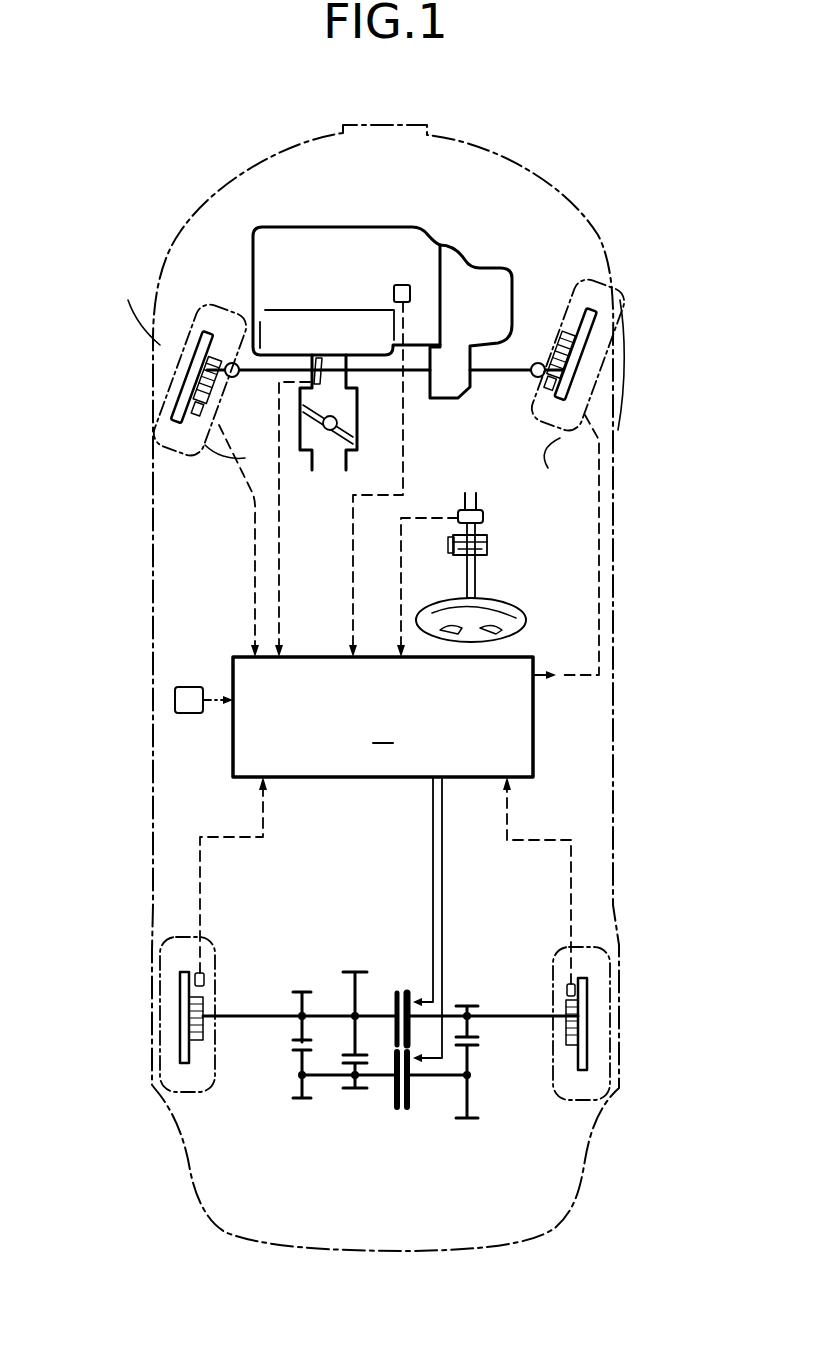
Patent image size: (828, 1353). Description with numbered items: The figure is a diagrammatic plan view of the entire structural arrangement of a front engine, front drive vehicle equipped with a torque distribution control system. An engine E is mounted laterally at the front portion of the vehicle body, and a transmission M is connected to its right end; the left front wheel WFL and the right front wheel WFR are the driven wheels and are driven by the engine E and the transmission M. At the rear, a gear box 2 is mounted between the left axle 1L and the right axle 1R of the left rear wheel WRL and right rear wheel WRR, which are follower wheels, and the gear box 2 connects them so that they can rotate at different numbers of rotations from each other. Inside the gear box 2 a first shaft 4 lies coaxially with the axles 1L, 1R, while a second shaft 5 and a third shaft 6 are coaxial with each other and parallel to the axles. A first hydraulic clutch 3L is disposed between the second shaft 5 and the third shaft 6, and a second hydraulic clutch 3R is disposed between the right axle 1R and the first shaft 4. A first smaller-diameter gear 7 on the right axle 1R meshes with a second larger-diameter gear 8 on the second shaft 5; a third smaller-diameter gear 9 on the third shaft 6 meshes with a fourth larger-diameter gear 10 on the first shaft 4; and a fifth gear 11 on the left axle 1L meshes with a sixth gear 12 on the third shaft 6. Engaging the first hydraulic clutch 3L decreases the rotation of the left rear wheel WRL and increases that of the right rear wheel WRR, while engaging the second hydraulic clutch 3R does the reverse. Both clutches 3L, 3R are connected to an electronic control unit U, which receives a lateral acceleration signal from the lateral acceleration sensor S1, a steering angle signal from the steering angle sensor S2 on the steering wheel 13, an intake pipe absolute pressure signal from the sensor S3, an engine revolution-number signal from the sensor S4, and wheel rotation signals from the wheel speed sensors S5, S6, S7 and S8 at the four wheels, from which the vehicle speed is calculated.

The engine E is at (312, 235).
The transmission M is at (465, 262).
The electronic control unit U is at (394, 859).
The lateral acceleration sensor S1 is at (190, 697).
The steering angle sensor S2 is at (458, 513).
The intake pipe internal absolute pressure sensor S3 is at (324, 383).
The engine revolution-number sensor S4 is at (403, 285).
The wheel speed sensor S5 is at (222, 422).
The wheel speed sensor S6 is at (580, 410).
The wheel speed sensor S7 is at (205, 978).
The wheel speed sensor S8 is at (568, 982).
The steering wheel 13 is at (500, 605).
The left front wheel WFL is at (152, 333).
The right front wheel WFR is at (598, 290).
The left rear wheel WRL is at (160, 1015).
The right rear wheel WRR is at (612, 1018).
The left axle 1L is at (262, 1020).
The right axle 1R is at (523, 1020).
The gear box 2 is at (382, 1025).
The second hydraulic clutch 3R is at (406, 990).
The first hydraulic clutch 3L is at (400, 1115).
The first shaft 4 is at (397, 993).
The second shaft 5 is at (433, 1080).
The third shaft 6 is at (325, 1078).
The first smaller-diameter gear 7 is at (470, 1005).
The second larger-diameter gear 8 is at (470, 1120).
The third smaller-diameter gear 9 is at (355, 1090).
The fourth larger-diameter gear 10 is at (354, 971).
The fifth gear 11 is at (304, 990).
The sixth gear 12 is at (302, 1100).